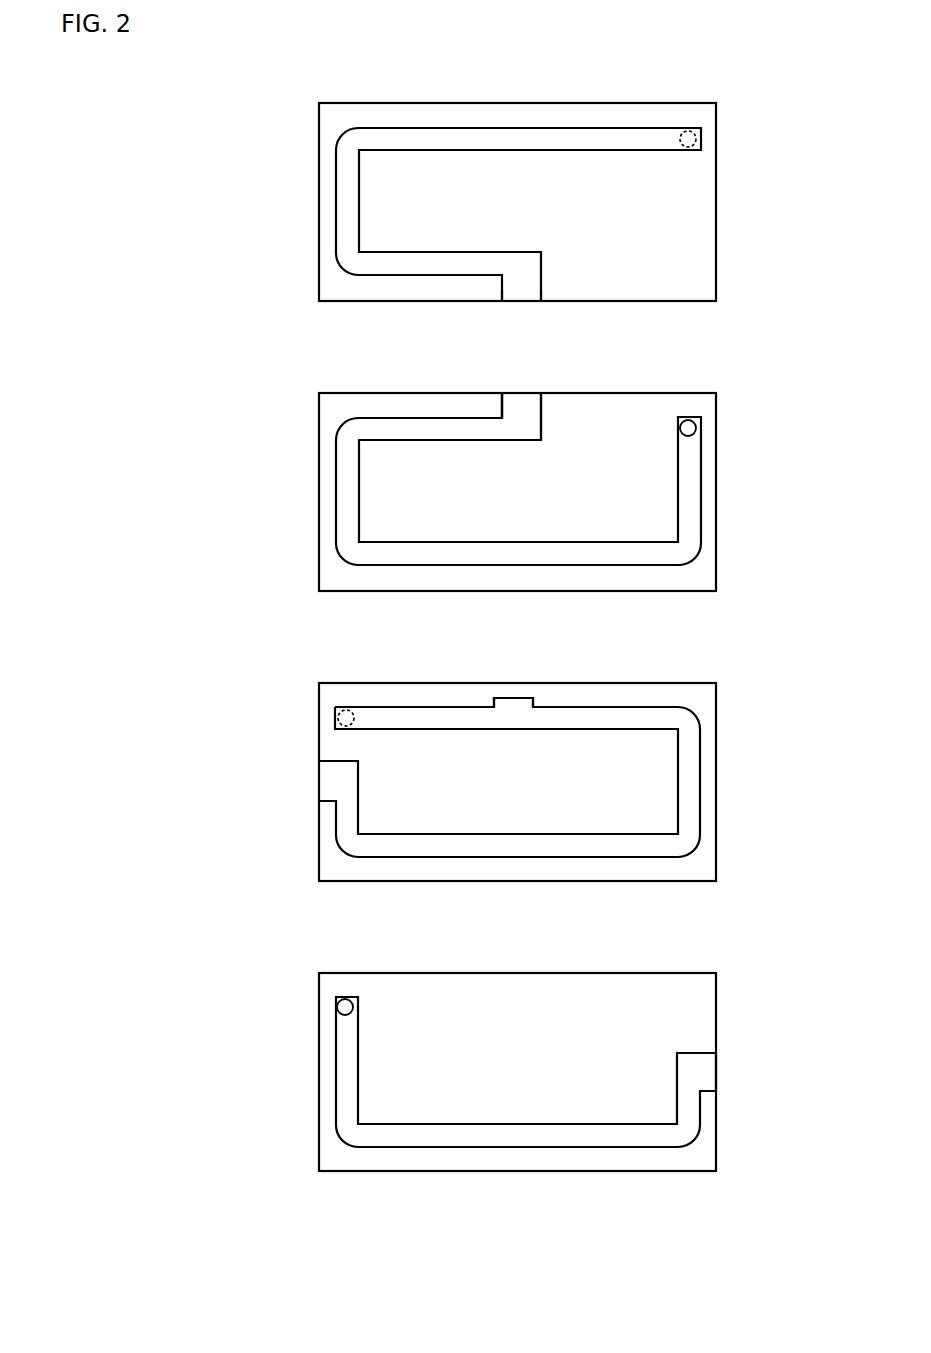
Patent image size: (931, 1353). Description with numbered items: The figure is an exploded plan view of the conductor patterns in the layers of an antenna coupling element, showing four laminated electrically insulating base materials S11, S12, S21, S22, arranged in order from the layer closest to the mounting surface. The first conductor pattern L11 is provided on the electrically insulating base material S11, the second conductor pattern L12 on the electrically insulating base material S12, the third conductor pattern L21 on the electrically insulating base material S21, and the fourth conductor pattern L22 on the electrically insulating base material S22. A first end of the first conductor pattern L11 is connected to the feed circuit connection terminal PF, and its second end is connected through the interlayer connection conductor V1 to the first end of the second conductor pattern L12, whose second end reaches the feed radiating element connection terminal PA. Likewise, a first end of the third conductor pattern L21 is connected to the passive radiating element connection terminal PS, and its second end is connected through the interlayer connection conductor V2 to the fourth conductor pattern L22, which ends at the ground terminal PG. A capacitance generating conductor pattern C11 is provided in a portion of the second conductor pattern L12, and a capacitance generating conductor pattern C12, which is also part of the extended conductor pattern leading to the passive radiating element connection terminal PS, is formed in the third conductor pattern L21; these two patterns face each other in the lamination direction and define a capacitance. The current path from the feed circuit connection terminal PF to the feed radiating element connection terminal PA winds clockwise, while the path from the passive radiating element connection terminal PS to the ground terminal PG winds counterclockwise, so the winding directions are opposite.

The electrically insulating base material S22 is at (708, 108).
The electrically insulating base material S21 is at (708, 398).
The electrically insulating base material S12 is at (708, 690).
The electrically insulating base material S11 is at (708, 978).
The fourth conductor pattern L22 is at (346, 197).
The third conductor pattern L21 is at (346, 497).
The second conductor pattern L12 is at (690, 785).
The first conductor pattern L11 is at (346, 1078).
The interlayer connection conductor V1 is at (337, 716).
The interlayer connection conductor V2 is at (688, 131).
The ground terminal PG is at (518, 292).
The passive radiating element connection terminal PS is at (521, 400).
The feed radiating element connection terminal PA is at (329, 783).
The feed circuit connection terminal PF is at (707, 1072).
The capacitance generating conductor pattern C11 is at (517, 698).
The capacitance generating conductor pattern C12 is at (517, 412).